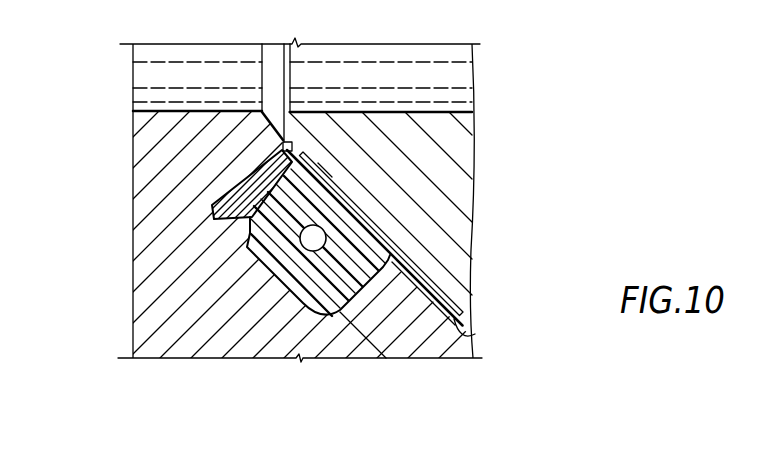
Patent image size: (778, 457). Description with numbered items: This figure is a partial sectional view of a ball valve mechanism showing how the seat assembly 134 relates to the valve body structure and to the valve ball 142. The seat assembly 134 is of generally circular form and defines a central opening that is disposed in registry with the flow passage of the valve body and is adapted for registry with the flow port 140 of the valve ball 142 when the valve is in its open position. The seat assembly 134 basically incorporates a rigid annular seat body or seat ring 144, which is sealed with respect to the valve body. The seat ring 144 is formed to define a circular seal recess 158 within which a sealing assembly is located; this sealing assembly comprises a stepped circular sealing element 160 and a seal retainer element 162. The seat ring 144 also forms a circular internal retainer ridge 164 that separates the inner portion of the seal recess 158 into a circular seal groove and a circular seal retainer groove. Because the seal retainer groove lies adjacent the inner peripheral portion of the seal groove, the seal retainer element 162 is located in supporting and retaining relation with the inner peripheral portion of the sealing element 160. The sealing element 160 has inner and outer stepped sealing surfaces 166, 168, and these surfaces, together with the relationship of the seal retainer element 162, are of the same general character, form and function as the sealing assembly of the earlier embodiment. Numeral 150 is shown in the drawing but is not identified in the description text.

The seat assembly 134 is at (120, 333).
The flow port 140 is at (447, 86).
The valve ball 142 is at (457, 263).
The seat ring 144 is at (207, 352).
The rounded end of fastener 150 is at (470, 332).
The seal recess 158 is at (262, 272).
The stepped circular sealing element 160 is at (323, 207).
The seal retainer element 162 is at (287, 141).
The internal retainer ridge 164 is at (242, 225).
The inner stepped sealing surface 166 is at (373, 228).
The outer stepped sealing surface 168 is at (325, 168).